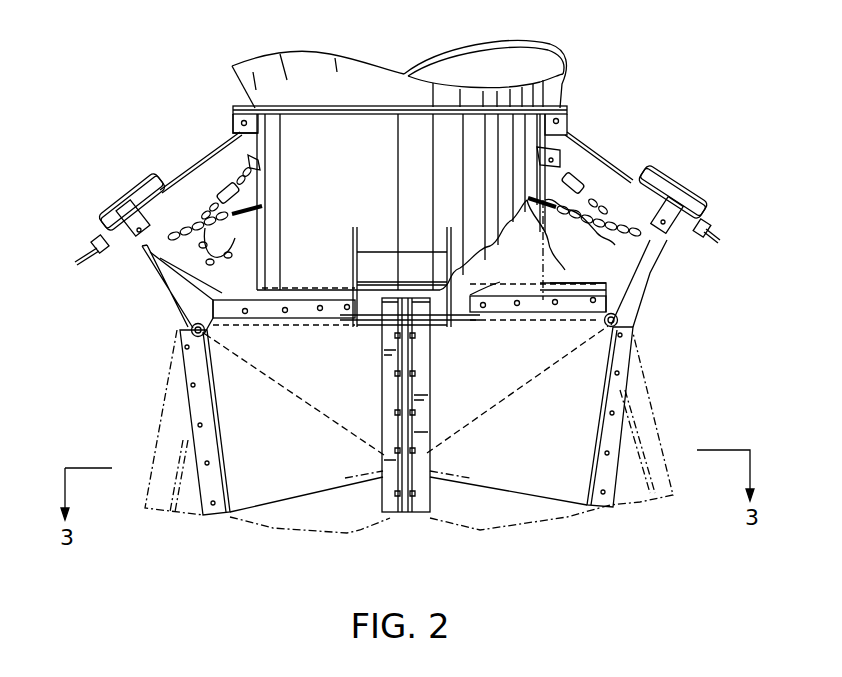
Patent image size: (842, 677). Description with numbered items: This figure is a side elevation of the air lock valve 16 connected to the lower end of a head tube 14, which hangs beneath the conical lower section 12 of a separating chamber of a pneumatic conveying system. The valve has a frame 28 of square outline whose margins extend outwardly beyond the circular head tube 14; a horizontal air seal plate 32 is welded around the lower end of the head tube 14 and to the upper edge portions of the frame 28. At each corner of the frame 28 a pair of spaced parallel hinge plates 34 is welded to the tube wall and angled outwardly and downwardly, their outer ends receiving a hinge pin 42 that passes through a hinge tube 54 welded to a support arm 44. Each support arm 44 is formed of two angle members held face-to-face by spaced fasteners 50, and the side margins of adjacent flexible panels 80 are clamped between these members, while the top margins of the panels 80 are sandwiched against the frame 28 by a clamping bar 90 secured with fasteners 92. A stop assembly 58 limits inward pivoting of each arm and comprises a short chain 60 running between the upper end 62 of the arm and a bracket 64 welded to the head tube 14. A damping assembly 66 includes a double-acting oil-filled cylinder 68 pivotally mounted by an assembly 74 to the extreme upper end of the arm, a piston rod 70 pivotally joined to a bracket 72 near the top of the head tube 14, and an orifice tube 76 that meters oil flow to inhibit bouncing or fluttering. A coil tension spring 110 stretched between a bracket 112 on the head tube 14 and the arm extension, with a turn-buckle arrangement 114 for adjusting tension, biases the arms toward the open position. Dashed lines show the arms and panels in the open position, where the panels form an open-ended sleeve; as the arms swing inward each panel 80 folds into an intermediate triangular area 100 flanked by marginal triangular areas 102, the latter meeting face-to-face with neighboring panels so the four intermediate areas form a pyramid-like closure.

The conical lower section 12 is at (560, 78).
The head tube 14 is at (525, 133).
The air lock valve 16 is at (638, 321).
The frame 28 is at (607, 290).
The air seal plate 32 is at (550, 283).
The hinge plates 34 is at (231, 300).
The hinge pin 42 is at (191, 337).
The support arm 44 is at (183, 405).
The fasteners 50 is at (199, 427).
The hinge tube 54 is at (410, 369).
The stop assembly 58 is at (576, 228).
The chain 60 is at (237, 297).
The upper end of the arm 62 is at (165, 268).
The bracket 64 is at (258, 216).
The damping assembly 66 is at (105, 188).
The cylinder 68 is at (148, 194).
The piston rod 70 is at (222, 148).
The bracket 72 is at (236, 120).
The assembly 74 is at (111, 264).
The orifice tube 76 is at (131, 198).
The flexible panels 80 is at (259, 483).
The clamping bar 90 is at (532, 302).
The fasteners 92 is at (517, 307).
The intermediate triangular area 100 is at (357, 427).
The marginal triangular areas 102 is at (303, 483).
The coil tension spring 110 is at (190, 240).
The bracket 112 is at (557, 146).
The turn-buckle arrangement 114 is at (222, 190).